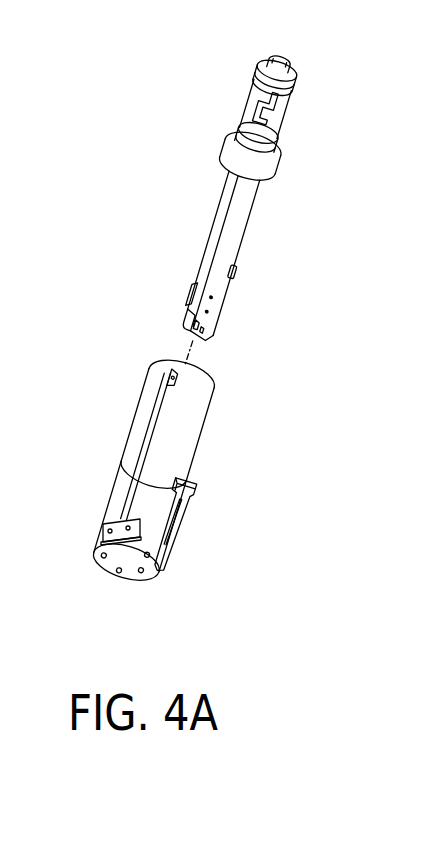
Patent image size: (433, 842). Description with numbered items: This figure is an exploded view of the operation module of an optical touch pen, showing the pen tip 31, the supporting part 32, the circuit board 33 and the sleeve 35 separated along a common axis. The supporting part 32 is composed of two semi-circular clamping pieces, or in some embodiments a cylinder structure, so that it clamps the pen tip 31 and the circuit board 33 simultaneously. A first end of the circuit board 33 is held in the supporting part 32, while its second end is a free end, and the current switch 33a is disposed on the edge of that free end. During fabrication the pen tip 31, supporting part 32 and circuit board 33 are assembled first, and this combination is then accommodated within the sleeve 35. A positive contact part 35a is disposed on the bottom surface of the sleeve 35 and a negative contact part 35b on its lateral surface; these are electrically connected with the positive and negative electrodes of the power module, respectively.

The pen tip 31 is at (284, 57).
The supporting part 32 is at (277, 94).
The circuit board 33 is at (228, 230).
The current switch 33a is at (187, 293).
The sleeve 35 is at (178, 422).
The positive contact part 35a is at (131, 558).
The negative contact part 35b is at (118, 527).